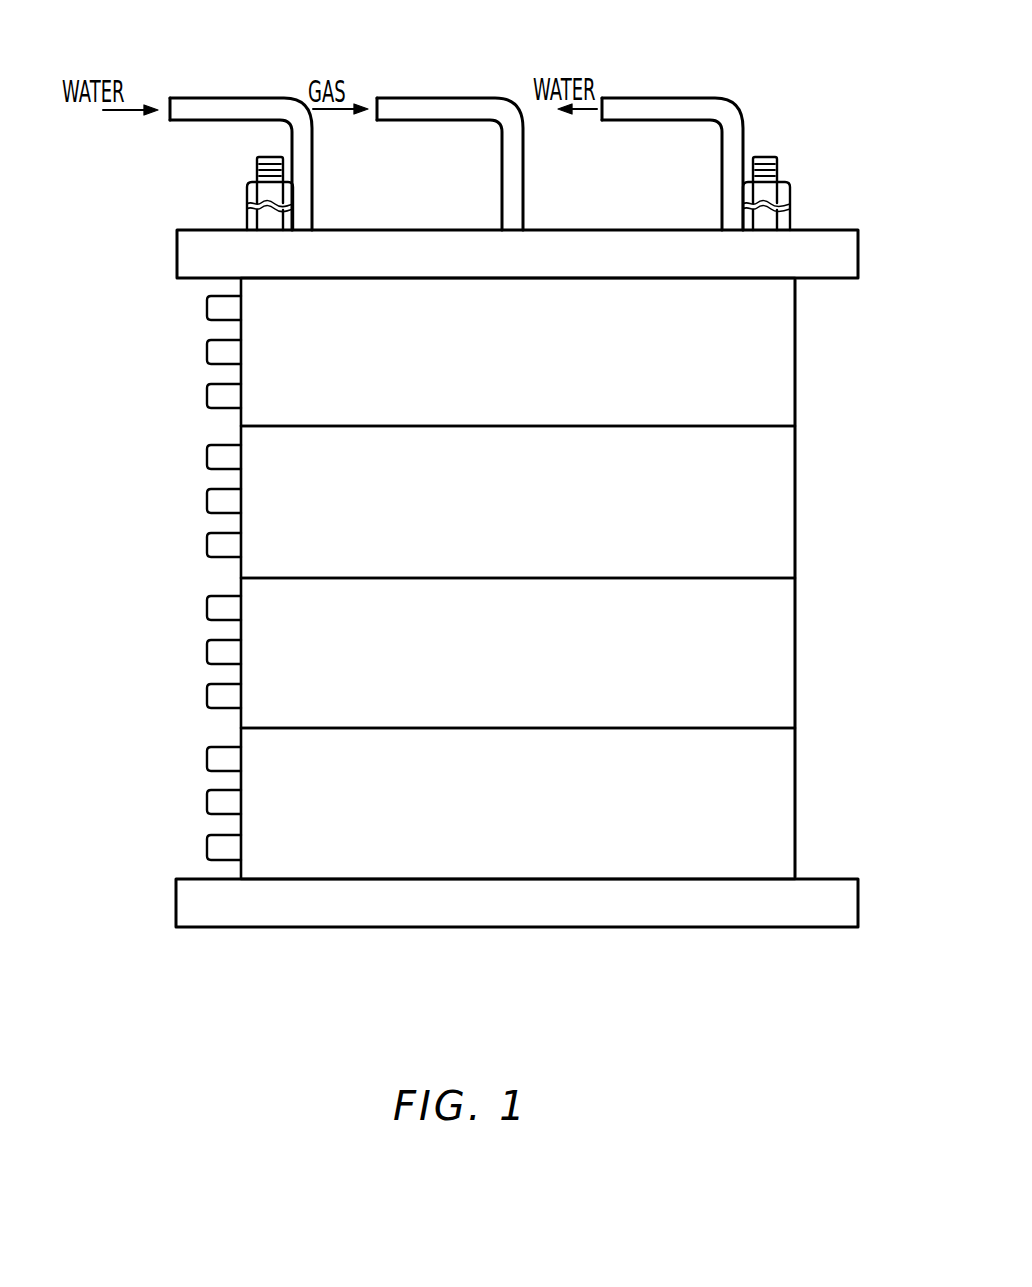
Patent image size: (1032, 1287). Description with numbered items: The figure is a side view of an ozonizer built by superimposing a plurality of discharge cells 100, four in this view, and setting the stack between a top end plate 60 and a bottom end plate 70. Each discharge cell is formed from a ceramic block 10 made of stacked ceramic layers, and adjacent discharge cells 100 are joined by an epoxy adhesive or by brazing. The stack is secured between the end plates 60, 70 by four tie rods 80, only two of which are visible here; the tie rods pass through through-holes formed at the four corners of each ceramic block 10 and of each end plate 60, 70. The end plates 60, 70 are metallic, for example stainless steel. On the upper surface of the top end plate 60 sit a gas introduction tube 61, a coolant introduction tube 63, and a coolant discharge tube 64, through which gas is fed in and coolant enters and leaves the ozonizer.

The ceramic block 10 is at (795, 341).
The discharge cell 100 is at (828, 381).
The top end plate 60 is at (832, 228).
The gas introduction tube 61 is at (432, 97).
The coolant introduction tube 63 is at (222, 97).
The coolant discharge tube 64 is at (658, 97).
The bottom end plate 70 is at (517, 929).
The tie rod 80 is at (765, 155).